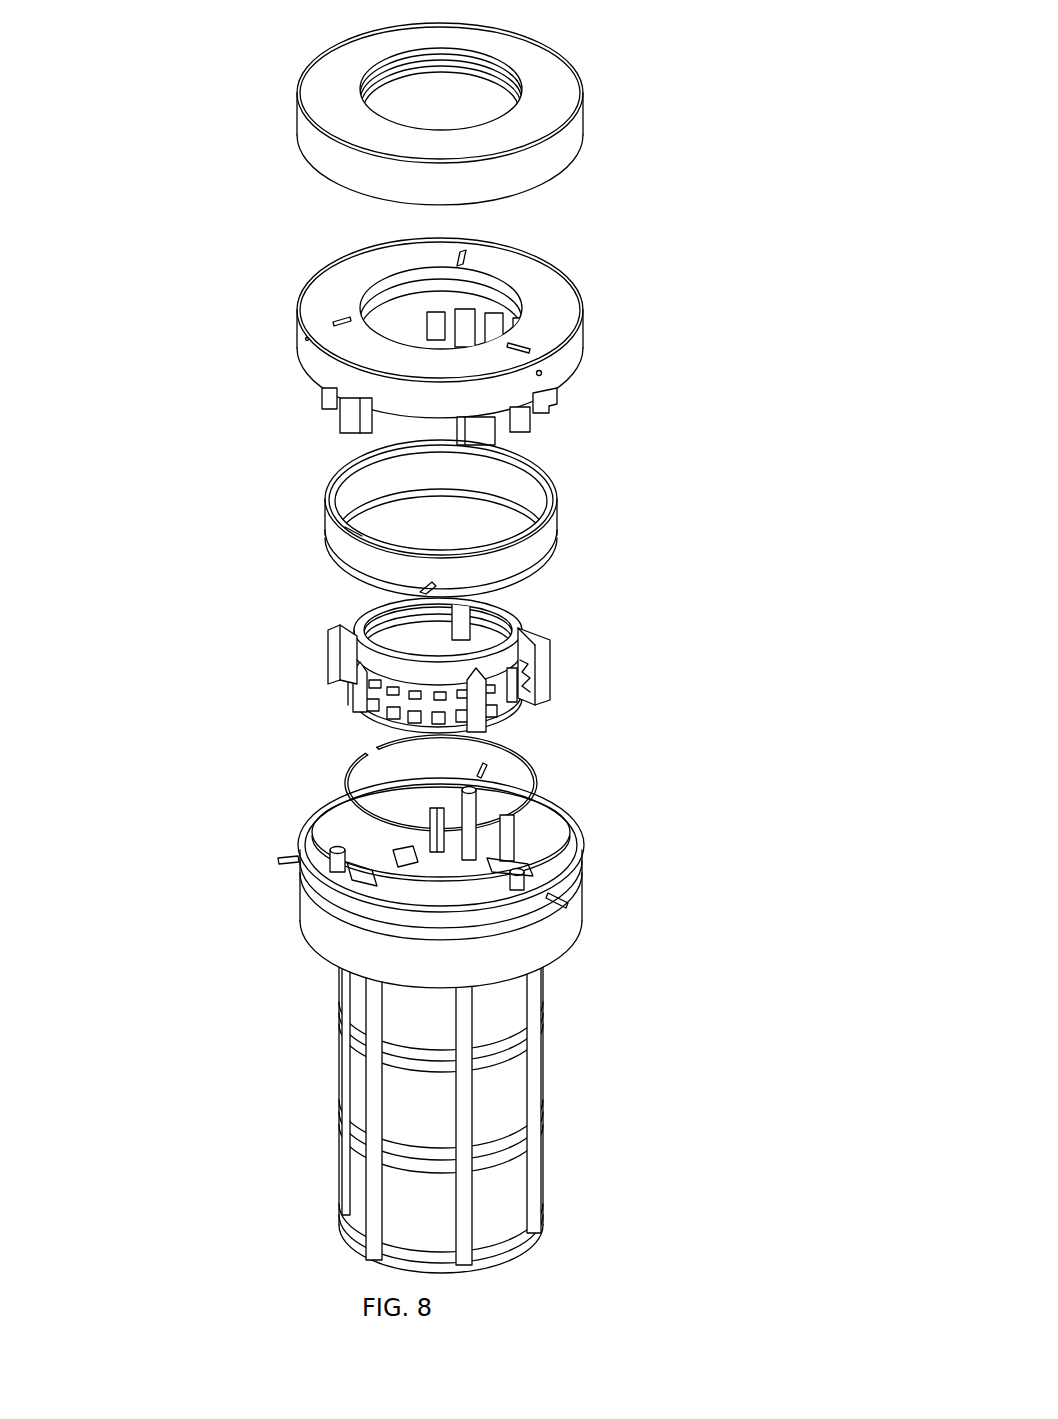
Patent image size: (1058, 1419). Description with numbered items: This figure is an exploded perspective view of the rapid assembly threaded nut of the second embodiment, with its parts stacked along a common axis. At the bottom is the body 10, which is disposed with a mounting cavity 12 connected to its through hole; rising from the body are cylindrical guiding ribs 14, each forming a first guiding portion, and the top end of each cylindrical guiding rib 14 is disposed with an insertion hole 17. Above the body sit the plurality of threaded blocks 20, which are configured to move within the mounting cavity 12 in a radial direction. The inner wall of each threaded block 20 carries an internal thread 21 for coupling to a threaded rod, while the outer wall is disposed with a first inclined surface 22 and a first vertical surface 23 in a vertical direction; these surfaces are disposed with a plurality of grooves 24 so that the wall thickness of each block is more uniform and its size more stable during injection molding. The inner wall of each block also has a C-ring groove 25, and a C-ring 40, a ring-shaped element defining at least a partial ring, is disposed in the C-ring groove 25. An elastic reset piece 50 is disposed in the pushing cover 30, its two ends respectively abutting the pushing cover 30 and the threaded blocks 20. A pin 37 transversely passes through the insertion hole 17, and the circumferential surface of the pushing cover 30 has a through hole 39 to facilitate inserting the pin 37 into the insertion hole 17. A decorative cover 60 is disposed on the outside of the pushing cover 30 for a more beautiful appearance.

The body 10 is at (475, 1025).
The mounting cavity 12 is at (575, 850).
The cylindrical guiding rib 14 is at (476, 827).
The insertion hole 17 is at (473, 793).
The threaded blocks 20 is at (459, 696).
The internal thread 21 is at (518, 628).
The first inclined surface 22 is at (355, 700).
The first vertical surface 23 is at (378, 718).
The grooves 24 is at (484, 712).
The C-ring groove 25 is at (370, 608).
The pushing cover 30 is at (563, 358).
The pin 37 is at (297, 860).
The through hole 39 is at (542, 375).
The C-ring 40 is at (538, 770).
The elastic reset piece 50 is at (553, 522).
The decorative cover 60 is at (541, 112).